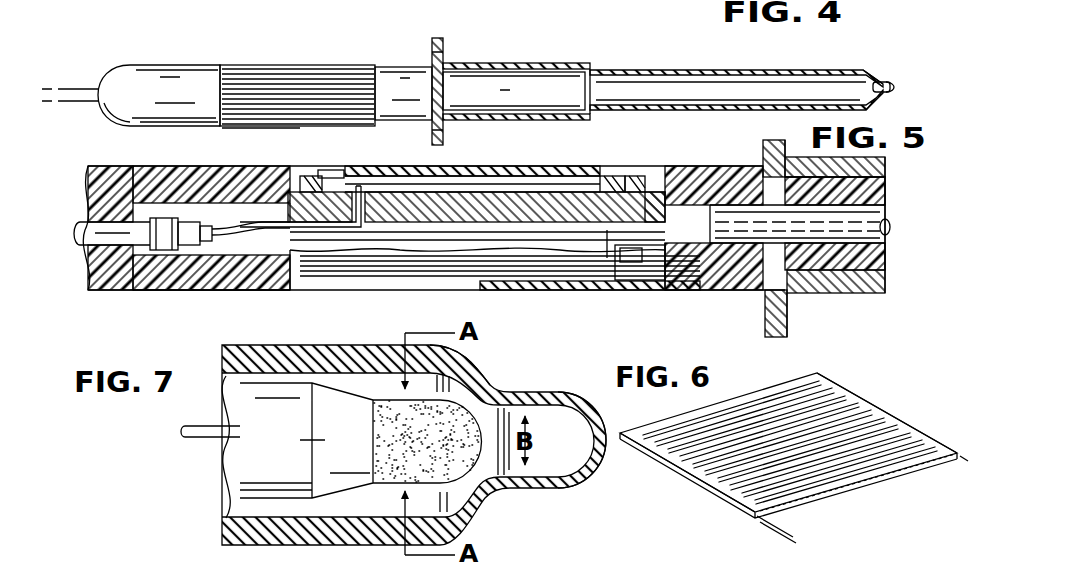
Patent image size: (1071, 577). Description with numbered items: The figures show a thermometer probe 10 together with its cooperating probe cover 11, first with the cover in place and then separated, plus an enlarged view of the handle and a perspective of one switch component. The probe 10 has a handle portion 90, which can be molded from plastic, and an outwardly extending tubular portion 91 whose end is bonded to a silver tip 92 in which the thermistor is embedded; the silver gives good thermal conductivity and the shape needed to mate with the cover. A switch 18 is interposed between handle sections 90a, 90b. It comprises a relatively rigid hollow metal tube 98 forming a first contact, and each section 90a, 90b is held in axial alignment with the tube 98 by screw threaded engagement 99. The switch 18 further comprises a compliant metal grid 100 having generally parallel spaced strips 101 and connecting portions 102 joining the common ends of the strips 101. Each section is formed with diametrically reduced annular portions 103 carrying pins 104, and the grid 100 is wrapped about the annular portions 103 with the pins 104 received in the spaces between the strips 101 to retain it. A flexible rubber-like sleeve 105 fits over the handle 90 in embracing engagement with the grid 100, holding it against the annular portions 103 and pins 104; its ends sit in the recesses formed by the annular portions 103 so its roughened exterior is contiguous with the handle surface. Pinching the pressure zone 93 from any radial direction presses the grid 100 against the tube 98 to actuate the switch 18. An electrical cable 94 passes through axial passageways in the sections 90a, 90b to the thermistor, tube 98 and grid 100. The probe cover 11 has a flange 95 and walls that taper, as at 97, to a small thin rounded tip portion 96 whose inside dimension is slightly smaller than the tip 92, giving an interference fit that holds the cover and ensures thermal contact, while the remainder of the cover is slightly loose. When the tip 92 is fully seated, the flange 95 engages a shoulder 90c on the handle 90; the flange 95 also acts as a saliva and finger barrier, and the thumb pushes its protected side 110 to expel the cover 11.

In FIG. 4, the probe 10 is at (128, 56).
In FIG. 4, the probe cover 11 is at (644, 64).
In FIG. 5, the probe cover 11 is at (880, 292).
In FIG. 7, the probe cover 11 is at (305, 341).
In FIG. 4, the switch 18 is at (250, 60).
In FIG. 4, the handle portion 90 is at (175, 60).
In FIG. 5, the handle portion 90 is at (112, 298).
In FIG. 4, the handle section 90a is at (108, 108).
In FIG. 5, the handle section 90a is at (200, 296).
In FIG. 4, the handle section 90b is at (392, 64).
In FIG. 5, the handle section 90b is at (718, 292).
In FIG. 4, the shoulder 90c is at (436, 82).
In FIG. 5, the shoulder 90c is at (786, 291).
In FIG. 4, the tubular portion 91 is at (706, 90).
In FIG. 5, the tubular portion 91 is at (876, 213).
In FIG. 7, the tubular portion 91 is at (238, 421).
In FIG. 4, the silver tip 92 is at (884, 82).
In FIG. 7, the silver tip 92 is at (461, 459).
In FIG. 4, the pressure zone 93 is at (222, 128).
In FIG. 4, the electrical cable 94 is at (72, 90).
In FIG. 5, the electrical cable 94 is at (90, 248).
In FIG. 4, the flange 95 is at (443, 44).
In FIG. 5, the flange 95 is at (789, 336).
In FIG. 4, the rounded tip portion 96 is at (892, 87).
In FIG. 7, the rounded tip portion 96 is at (584, 481).
In FIG. 4, the tapered wall portion 97 is at (876, 80).
In FIG. 7, the tapered wall portion 97 is at (476, 380).
In FIG. 5, the hollow metal tube 98 is at (449, 206).
In FIG. 5, the screw threaded engagement 99 is at (288, 178).
In FIG. 5, the compliant metal grid 100 is at (535, 160).
In FIG. 6, the compliant metal grid 100 is at (862, 391).
In FIG. 5, the strips 101 is at (486, 178).
In FIG. 6, the strips 101 is at (775, 407).
In FIG. 5, the connecting portions 102 is at (352, 180).
In FIG. 6, the connecting portions 102 is at (890, 421).
In FIG. 5, the diametrically reduced annular portions 103 is at (313, 175).
In FIG. 5, the pins 104 is at (372, 186).
In FIG. 4, the flexible sleeve 105 is at (296, 77).
In FIG. 5, the flexible sleeve 105 is at (500, 288).
In FIG. 4, the protected side 110 is at (432, 54).
In FIG. 5, the protected side 110 is at (766, 310).